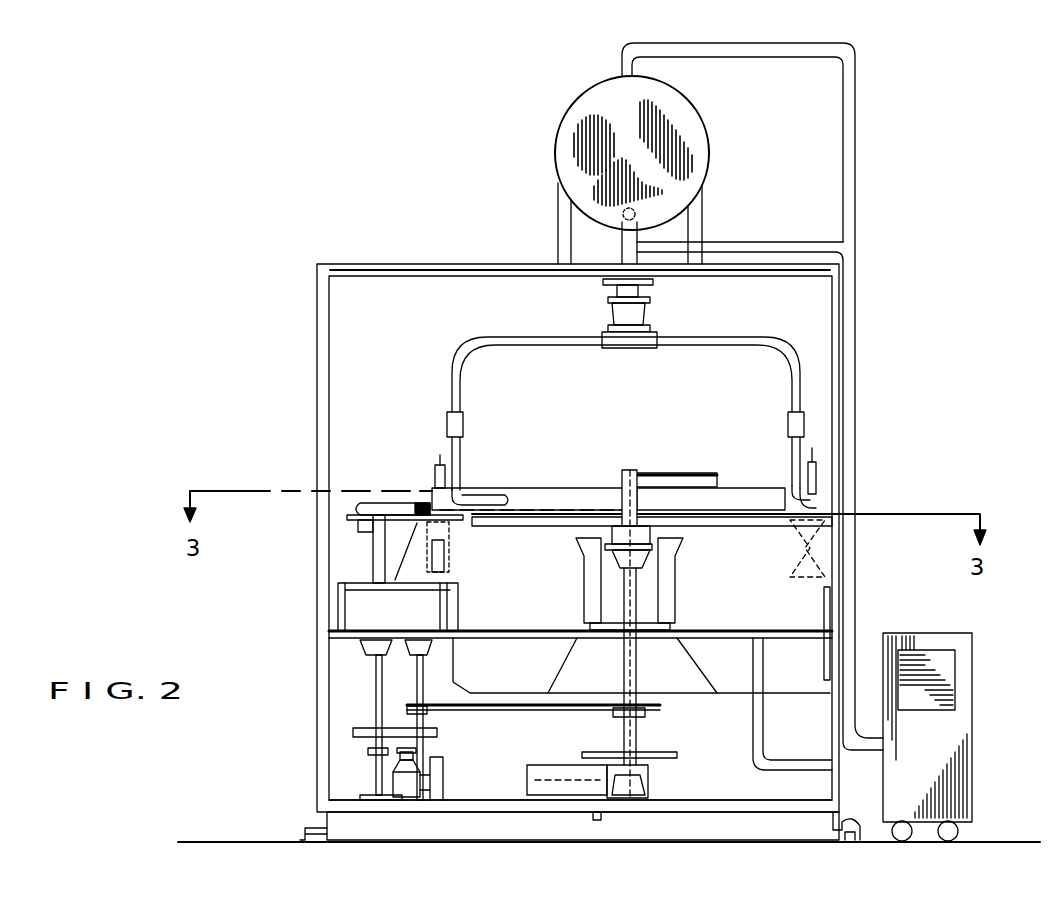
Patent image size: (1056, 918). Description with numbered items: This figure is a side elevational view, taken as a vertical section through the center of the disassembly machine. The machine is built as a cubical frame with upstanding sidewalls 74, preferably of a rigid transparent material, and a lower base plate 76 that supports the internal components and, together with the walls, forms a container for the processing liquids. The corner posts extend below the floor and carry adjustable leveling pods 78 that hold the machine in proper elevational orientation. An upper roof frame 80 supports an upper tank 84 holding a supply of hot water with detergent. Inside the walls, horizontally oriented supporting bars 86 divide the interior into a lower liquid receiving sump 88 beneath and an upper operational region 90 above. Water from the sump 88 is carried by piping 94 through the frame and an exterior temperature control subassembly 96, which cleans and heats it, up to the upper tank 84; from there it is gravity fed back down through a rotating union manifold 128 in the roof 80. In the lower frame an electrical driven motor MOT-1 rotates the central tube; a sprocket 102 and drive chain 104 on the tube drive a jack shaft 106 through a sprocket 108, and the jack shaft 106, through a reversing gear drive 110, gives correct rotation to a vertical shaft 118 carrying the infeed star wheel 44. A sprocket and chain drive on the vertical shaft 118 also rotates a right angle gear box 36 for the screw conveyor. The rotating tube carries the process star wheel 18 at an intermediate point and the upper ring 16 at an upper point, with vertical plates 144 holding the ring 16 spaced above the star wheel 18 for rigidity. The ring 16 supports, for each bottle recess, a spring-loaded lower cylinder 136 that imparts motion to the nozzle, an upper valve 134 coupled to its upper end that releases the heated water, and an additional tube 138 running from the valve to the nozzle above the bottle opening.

The upper ring 16 is at (717, 486).
The process star wheel 18 is at (557, 527).
The right angle gear box 36 is at (406, 788).
The infeed star wheel 44 is at (357, 509).
The sidewalls 74 is at (318, 312).
The lower base plate 76 is at (475, 818).
The adjustable leveling pods 78 is at (303, 832).
The upper roof frame 80 is at (445, 264).
The upper tank 84 is at (557, 134).
The supporting bars 86 is at (481, 630).
The lower liquid receiving sump 88 is at (489, 693).
The upper operational region 90 is at (438, 348).
The piping 94 is at (853, 590).
The exterior temperature control subassembly 96 is at (972, 700).
The sprocket 102 is at (660, 708).
The drive chain 104 is at (511, 708).
The jack shaft 106 is at (428, 712).
The sprocket 108 is at (415, 702).
The reversing gear drive 110 is at (353, 733).
The vertical shaft 118 is at (333, 663).
The rotating union manifold 128 is at (603, 334).
The upper valve 134 is at (447, 418).
The lower cylinder 136 is at (816, 477).
The additional tube 138 is at (457, 466).
The vertical plates 144 is at (525, 490).
The electrical driven motor MOT-1 is at (567, 792).